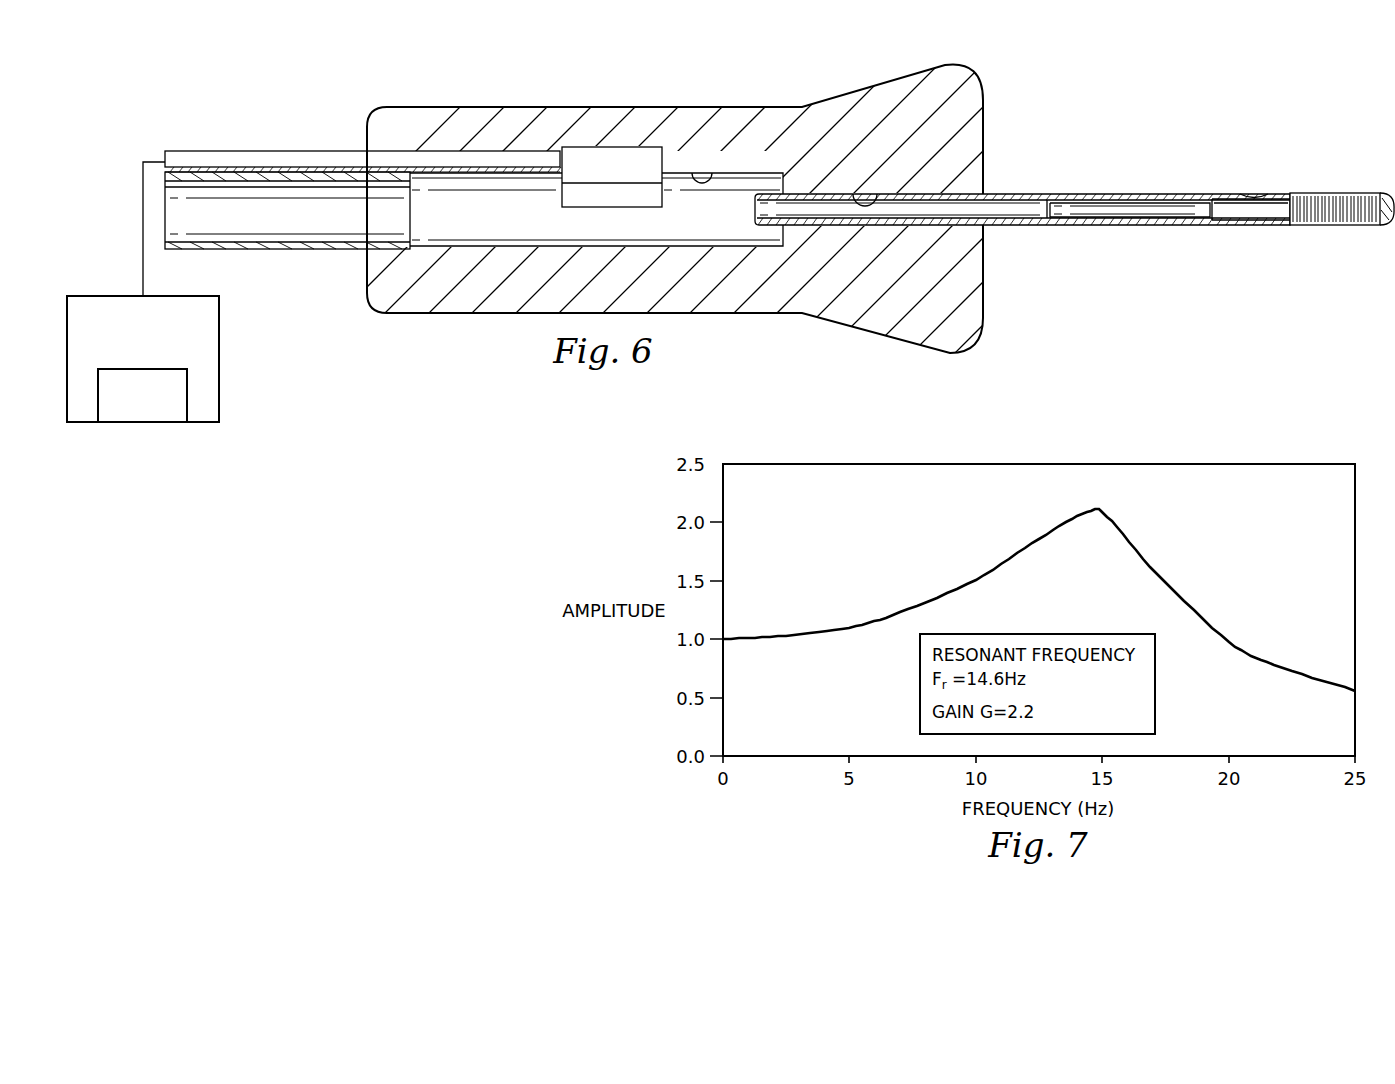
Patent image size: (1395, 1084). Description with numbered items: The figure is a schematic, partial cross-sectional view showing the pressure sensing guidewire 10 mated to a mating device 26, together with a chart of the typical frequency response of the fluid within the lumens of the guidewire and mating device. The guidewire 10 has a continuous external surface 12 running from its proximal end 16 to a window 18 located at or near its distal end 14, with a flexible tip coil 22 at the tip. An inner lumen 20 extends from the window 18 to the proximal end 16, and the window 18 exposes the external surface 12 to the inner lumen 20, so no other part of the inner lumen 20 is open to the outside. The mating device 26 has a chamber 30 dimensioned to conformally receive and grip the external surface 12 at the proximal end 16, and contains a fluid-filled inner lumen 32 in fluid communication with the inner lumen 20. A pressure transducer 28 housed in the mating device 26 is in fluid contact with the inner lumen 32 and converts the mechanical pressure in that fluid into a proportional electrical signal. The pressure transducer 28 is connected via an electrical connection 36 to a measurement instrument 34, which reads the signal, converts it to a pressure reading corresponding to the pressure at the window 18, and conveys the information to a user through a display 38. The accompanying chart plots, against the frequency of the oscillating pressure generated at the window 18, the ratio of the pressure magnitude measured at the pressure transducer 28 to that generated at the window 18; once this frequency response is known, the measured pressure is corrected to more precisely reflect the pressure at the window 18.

The pressure sensing guidewire 10 is at (1074, 183).
The external surface 12 is at (1020, 189).
The distal end 14 is at (1380, 242).
The proximal end 16 is at (799, 177).
The window 18 is at (1253, 193).
The inner lumen 20 is at (1003, 212).
The flexible tip coil 22 is at (1337, 193).
The mating device 26 is at (516, 72).
The pressure transducer 28 is at (615, 163).
The chamber 30 is at (860, 190).
The inner lumen 32 is at (704, 172).
The measurement instrument 34 is at (107, 306).
The electrical connection 36 is at (244, 151).
The display 38 is at (143, 410).